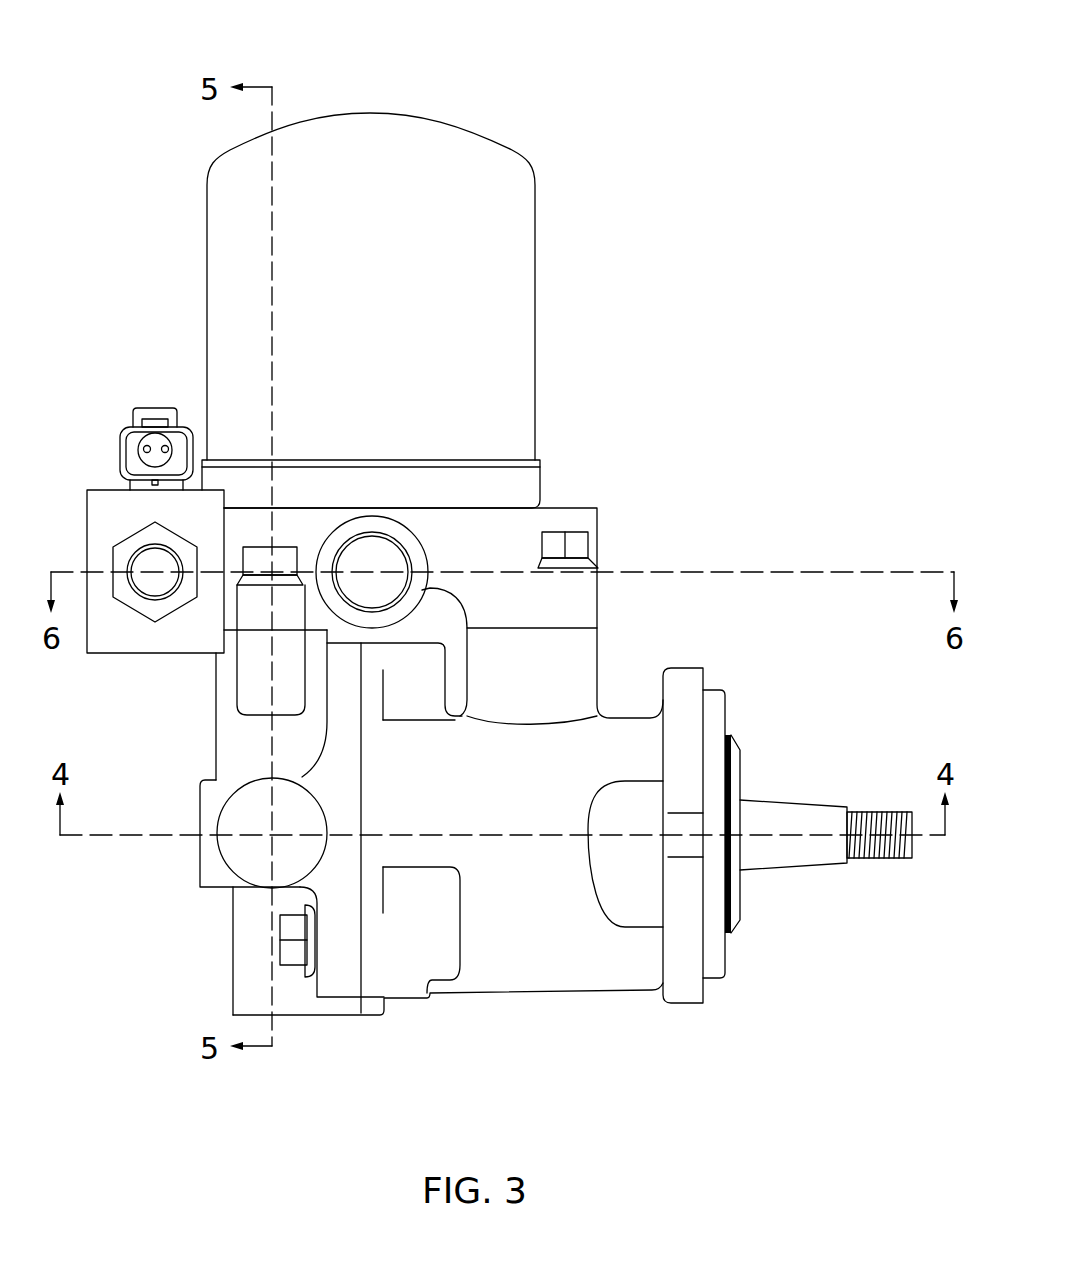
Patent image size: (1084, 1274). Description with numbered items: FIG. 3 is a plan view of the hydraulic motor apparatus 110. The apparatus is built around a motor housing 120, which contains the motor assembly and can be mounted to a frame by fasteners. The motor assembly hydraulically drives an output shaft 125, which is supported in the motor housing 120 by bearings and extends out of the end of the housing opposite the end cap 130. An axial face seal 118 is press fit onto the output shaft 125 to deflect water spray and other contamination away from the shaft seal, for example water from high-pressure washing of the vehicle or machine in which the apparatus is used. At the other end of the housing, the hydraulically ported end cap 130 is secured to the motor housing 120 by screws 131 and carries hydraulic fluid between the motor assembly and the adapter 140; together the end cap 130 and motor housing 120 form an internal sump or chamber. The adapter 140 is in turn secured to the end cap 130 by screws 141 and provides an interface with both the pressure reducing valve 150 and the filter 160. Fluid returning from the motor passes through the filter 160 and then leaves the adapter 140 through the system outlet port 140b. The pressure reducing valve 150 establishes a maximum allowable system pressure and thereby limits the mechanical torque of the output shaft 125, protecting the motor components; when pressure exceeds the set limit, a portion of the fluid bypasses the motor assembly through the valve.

The hydraulic motor apparatus 110 is at (757, 85).
The axial face seal 118 is at (742, 772).
The motor housing 120 is at (514, 787).
The output shaft 125 is at (818, 855).
The end cap 130 is at (338, 980).
The screws 131 is at (292, 965).
The adapter 140 is at (578, 597).
The system outlet port 140b is at (386, 548).
The screws 141 is at (292, 560).
The pressure reducing valve 150 is at (141, 522).
The filter 160 is at (394, 305).